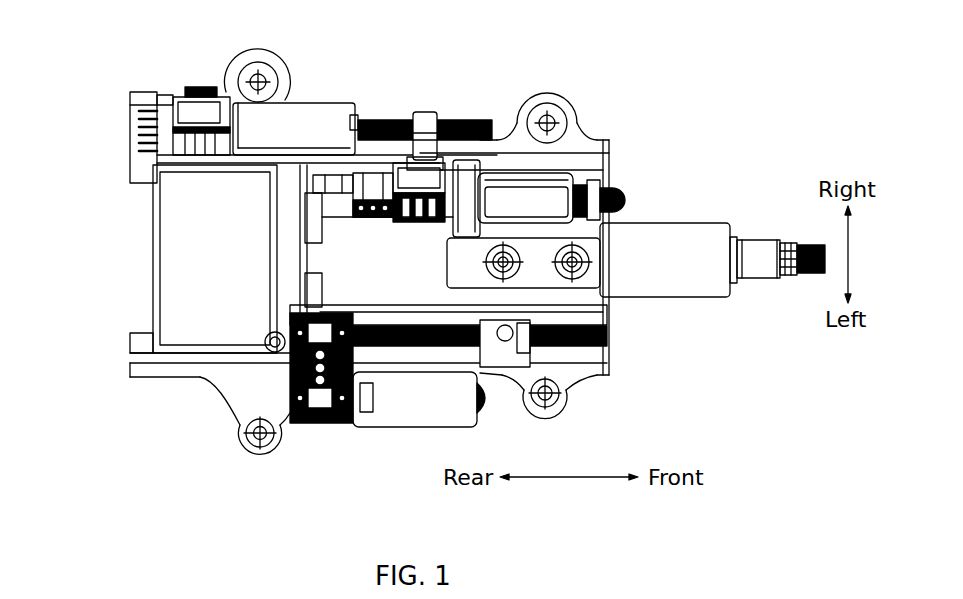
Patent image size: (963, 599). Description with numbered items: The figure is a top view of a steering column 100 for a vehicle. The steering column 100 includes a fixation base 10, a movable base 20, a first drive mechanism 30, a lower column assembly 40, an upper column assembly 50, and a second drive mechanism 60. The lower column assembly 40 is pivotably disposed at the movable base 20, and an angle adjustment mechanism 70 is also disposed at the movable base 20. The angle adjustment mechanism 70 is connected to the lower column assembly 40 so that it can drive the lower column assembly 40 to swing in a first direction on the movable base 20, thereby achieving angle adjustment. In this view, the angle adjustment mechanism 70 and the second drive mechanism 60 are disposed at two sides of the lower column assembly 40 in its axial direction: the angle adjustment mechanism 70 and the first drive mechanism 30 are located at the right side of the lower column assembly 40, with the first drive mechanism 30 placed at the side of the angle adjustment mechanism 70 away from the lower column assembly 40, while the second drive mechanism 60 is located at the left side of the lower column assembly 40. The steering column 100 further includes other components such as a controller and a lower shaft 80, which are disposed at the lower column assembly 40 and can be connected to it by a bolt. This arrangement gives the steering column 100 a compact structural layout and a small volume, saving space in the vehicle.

The steering column 100 is at (107, 62).
The fixation base 10 is at (132, 365).
The movable base 20 is at (550, 162).
The first drive mechanism 30 is at (300, 117).
The lower column assembly 40 is at (627, 186).
The upper column assembly 50 is at (687, 243).
The second drive mechanism 60 is at (447, 397).
The angle adjustment mechanism 70 is at (437, 115).
The lower shaft 80 is at (188, 265).